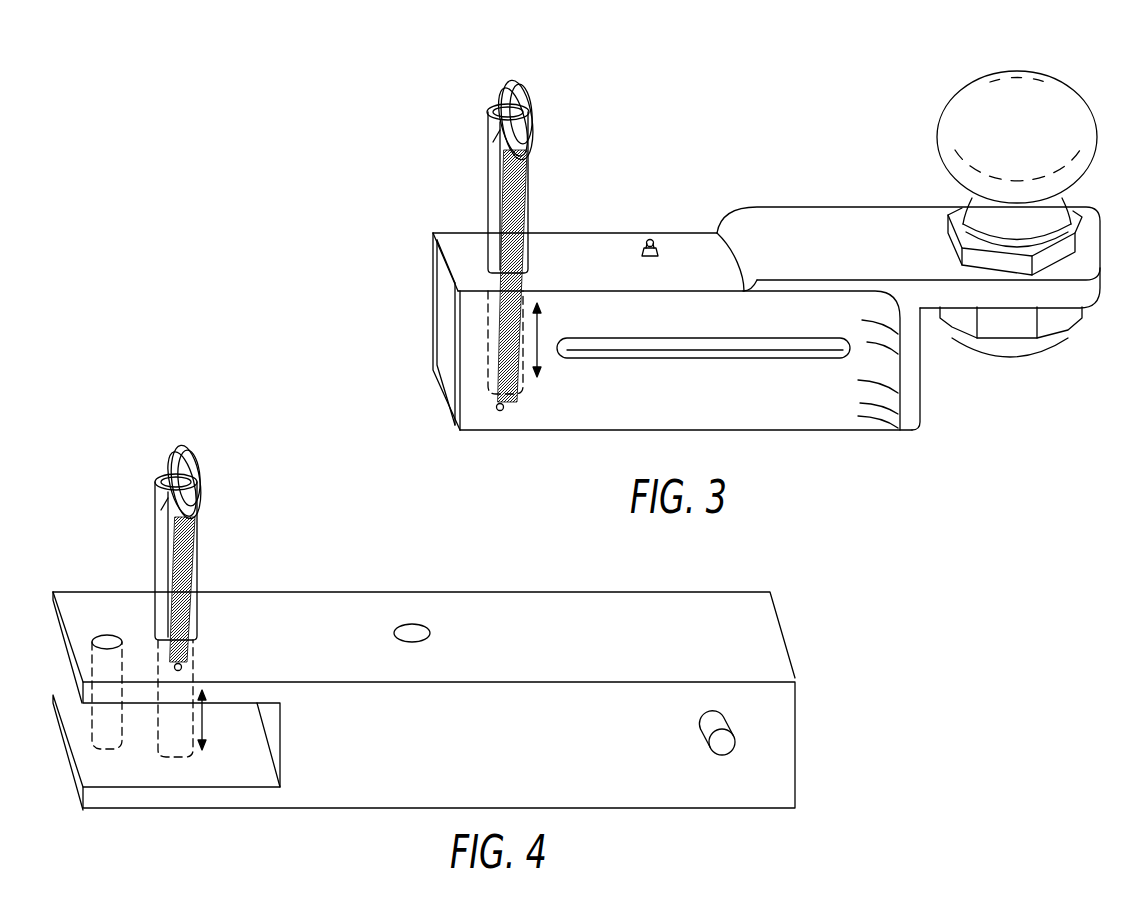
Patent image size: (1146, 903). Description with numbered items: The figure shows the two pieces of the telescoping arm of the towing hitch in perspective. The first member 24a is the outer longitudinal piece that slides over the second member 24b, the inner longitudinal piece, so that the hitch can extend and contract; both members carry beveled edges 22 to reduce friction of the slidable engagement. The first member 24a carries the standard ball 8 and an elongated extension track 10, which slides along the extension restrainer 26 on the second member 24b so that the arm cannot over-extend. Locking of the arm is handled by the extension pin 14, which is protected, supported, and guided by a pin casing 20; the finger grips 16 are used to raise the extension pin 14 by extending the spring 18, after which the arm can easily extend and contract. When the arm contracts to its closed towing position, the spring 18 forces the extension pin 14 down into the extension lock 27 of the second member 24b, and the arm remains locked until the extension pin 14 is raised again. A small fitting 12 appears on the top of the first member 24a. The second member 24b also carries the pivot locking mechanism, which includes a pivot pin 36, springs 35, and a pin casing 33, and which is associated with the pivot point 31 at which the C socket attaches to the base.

In FIG. 3, the ball 8 is at (1040, 118).
In FIG. 3, the extension track 10 is at (603, 352).
In FIG. 3, the grease fitting 12 is at (653, 242).
In FIG. 3, the extension pin 14 is at (487, 335).
In FIG. 3, the finger grips 16 is at (533, 112).
In FIG. 4, the finger grips 16 is at (200, 482).
In FIG. 3, the spring 18 is at (510, 243).
In FIG. 3, the pin casing 20 is at (490, 112).
In FIG. 3, the beveled edges 22 is at (442, 390).
In FIG. 4, the beveled edges 22 is at (791, 652).
In FIG. 3, the first member 24a is at (877, 432).
In FIG. 4, the second member 24b is at (697, 592).
In FIG. 4, the extension restrainer 26 is at (726, 740).
In FIG. 4, the extension lock 27 is at (430, 630).
In FIG. 4, the pivot point 31 is at (104, 640).
In FIG. 4, the pin casing 33 is at (162, 474).
In FIG. 4, the springs 35 is at (181, 593).
In FIG. 4, the pivot pin 36 is at (165, 728).